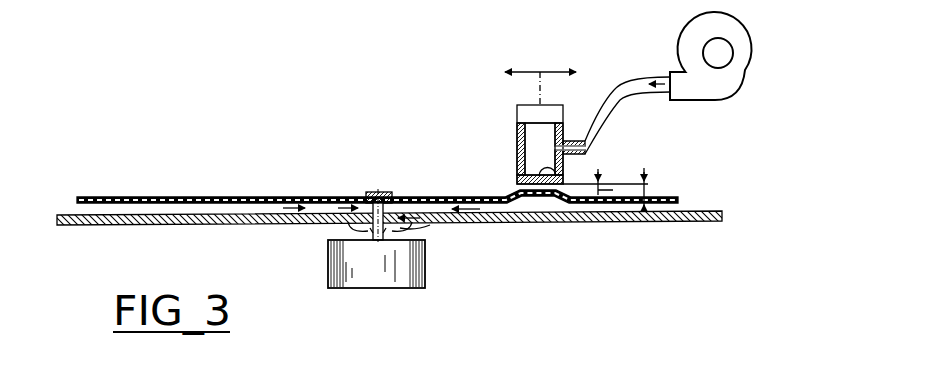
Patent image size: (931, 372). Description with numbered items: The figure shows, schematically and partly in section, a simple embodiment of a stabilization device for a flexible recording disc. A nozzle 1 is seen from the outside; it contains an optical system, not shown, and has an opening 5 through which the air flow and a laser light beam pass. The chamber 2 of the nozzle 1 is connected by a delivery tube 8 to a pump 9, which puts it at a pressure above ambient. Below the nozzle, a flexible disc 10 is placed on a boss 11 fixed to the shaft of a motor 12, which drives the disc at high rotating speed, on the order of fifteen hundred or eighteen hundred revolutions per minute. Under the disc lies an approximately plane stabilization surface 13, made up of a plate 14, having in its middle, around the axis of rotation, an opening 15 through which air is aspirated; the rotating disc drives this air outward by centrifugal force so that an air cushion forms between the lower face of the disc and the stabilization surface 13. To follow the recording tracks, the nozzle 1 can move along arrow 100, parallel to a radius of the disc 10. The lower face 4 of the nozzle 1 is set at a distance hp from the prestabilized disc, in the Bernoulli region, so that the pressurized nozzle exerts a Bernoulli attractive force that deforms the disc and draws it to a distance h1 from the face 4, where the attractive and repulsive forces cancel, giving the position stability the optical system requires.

The nozzle 1 is at (512, 138).
The chamber 2 is at (547, 144).
The lower face 4 is at (510, 190).
The opening 5 is at (564, 172).
The delivery tube 8 is at (617, 85).
The pump 9 is at (744, 80).
The arrow 100 is at (556, 72).
The flexible disc 10 is at (190, 197).
The boss 11 is at (387, 192).
The motor 12 is at (398, 288).
The stabilization surface 13 is at (698, 211).
The plate 14 is at (582, 223).
The opening 15 is at (424, 224).
The distance h1 is at (605, 183).
The distance hp is at (647, 190).